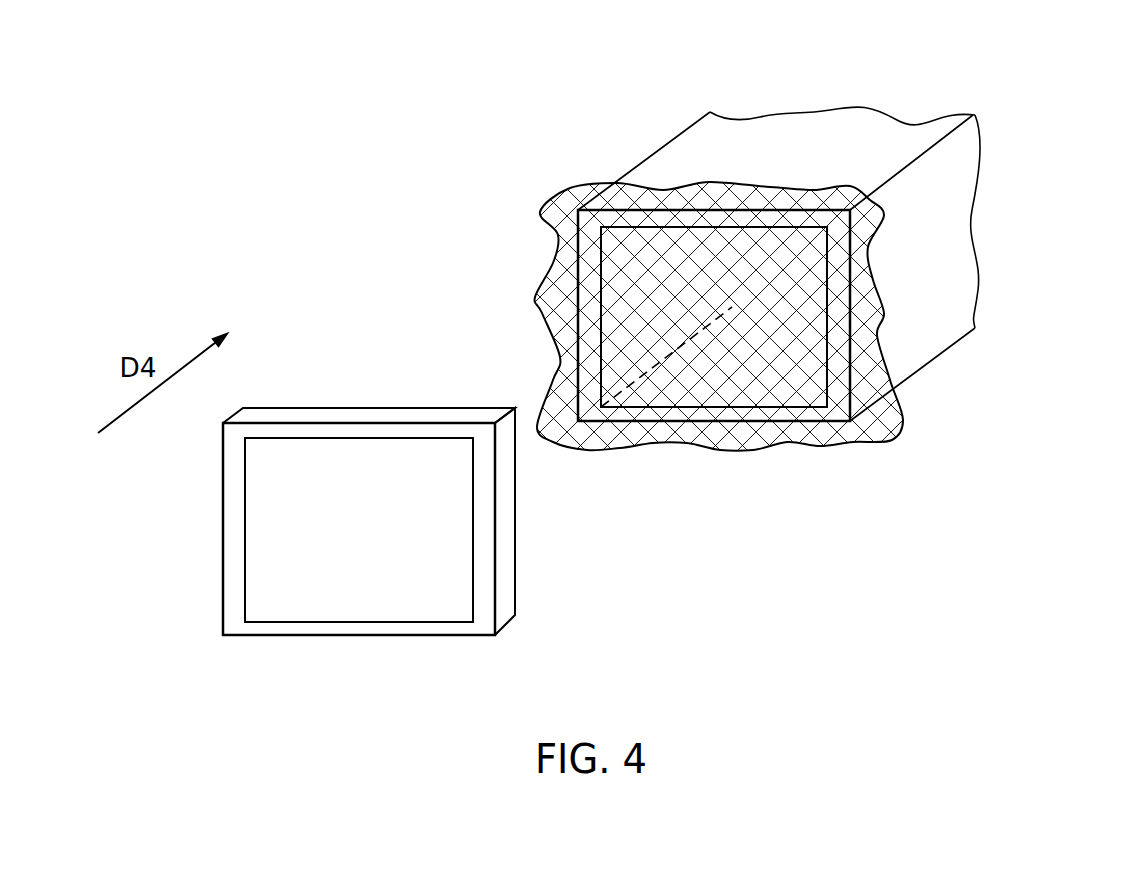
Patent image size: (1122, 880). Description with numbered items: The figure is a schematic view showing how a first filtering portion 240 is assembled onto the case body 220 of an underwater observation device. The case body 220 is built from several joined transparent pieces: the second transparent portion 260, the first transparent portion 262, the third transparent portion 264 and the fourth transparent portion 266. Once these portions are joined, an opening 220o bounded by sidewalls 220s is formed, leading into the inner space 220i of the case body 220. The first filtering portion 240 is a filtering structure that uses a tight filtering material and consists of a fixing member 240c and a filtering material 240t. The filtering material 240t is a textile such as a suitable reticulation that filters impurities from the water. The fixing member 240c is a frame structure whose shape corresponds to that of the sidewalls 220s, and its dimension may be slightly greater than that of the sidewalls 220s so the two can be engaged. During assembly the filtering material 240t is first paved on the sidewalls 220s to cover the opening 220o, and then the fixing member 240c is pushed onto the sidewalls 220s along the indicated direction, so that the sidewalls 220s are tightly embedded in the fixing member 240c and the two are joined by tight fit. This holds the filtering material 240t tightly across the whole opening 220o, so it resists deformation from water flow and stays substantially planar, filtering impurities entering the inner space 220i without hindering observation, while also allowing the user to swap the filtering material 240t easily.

The case body 220 is at (948, 137).
The inner space 220i is at (798, 297).
The sidewalls 220s is at (866, 373).
The opening 220o is at (808, 421).
The first filtering portion 240 is at (548, 510).
The fixing member 240c is at (507, 492).
The filtering material 240t is at (657, 447).
The second transparent portion 260 is at (745, 412).
The first transparent portion 262 is at (730, 122).
The third transparent portion 264 is at (945, 203).
The fourth transparent portion 266 is at (593, 281).